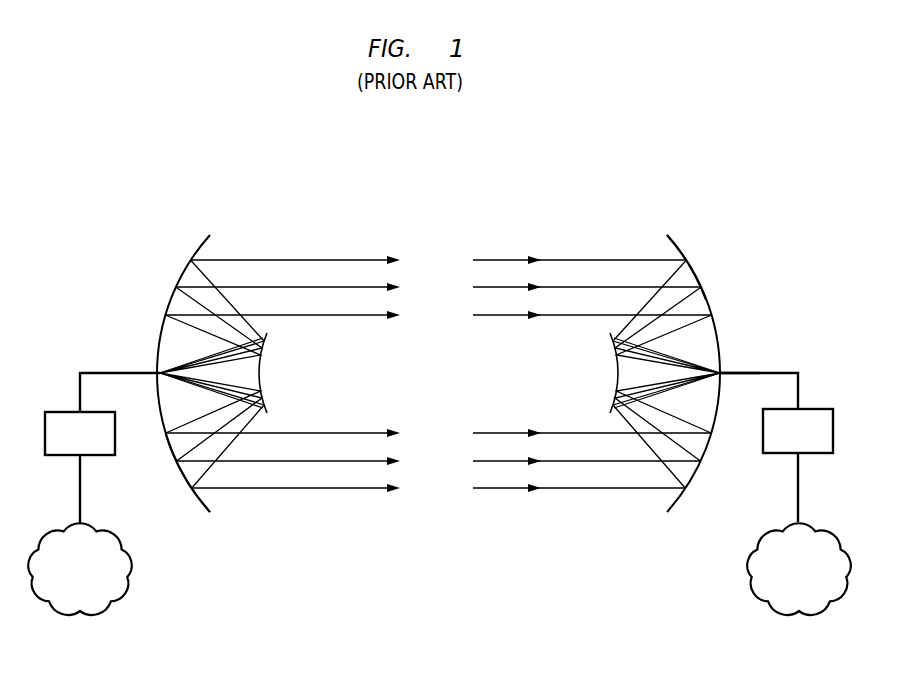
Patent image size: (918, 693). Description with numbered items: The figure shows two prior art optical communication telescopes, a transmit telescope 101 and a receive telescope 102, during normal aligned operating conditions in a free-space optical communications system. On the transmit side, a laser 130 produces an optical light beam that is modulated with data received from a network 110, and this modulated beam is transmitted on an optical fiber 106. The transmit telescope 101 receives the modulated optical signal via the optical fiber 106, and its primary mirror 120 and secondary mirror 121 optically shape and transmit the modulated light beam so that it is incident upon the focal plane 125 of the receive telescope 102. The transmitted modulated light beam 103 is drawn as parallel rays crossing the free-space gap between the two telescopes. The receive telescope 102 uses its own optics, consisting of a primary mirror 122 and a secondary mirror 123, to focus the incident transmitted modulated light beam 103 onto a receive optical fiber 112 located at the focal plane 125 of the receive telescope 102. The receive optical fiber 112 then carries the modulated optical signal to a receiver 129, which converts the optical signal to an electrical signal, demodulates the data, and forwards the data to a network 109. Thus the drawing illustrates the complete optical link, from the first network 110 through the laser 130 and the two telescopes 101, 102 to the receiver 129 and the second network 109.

The transmit telescope 101 is at (236, 230).
The receive telescope 102 is at (642, 232).
The transmitted modulated light beam 103 is at (341, 260).
The optical fiber 106 is at (76, 373).
The network 109 is at (799, 534).
The network 110 is at (80, 535).
The receive optical fiber 112 is at (798, 374).
The primary mirror 120 is at (210, 510).
The secondary mirror 121 is at (261, 363).
The primary mirror 122 is at (697, 276).
The secondary mirror 123 is at (612, 371).
The focal plane 125 is at (737, 360).
The receiver 129 is at (798, 431).
The laser 130 is at (80, 433).